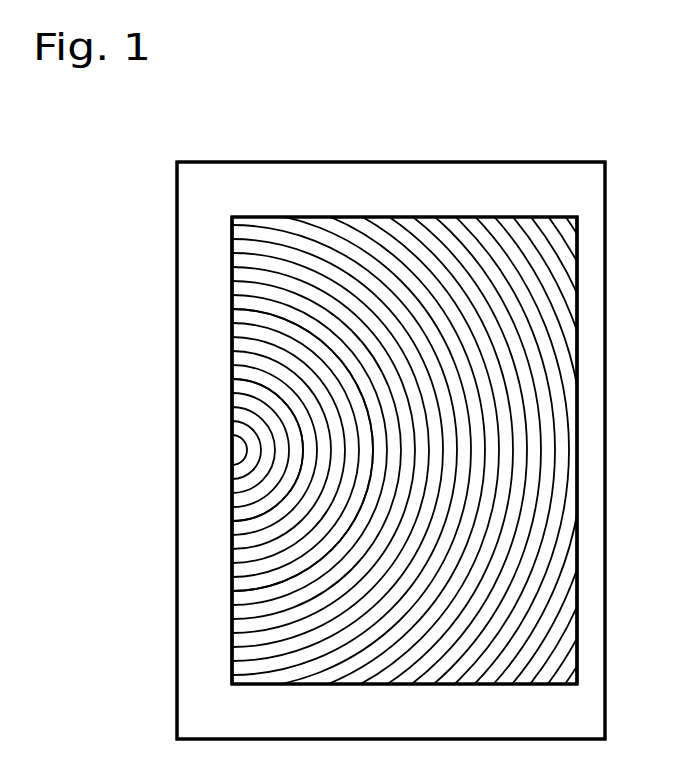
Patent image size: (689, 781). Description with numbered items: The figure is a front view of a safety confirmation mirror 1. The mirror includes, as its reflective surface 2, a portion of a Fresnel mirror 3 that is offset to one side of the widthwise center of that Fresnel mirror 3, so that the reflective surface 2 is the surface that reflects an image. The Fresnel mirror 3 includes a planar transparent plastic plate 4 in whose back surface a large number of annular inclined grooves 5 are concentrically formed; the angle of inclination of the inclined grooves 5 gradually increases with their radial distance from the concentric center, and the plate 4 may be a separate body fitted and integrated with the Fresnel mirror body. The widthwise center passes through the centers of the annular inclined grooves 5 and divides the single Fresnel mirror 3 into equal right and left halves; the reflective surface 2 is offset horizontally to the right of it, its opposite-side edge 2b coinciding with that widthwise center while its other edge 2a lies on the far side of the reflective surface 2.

The safety confirmation mirror 1 is at (152, 209).
The reflective surface 2 is at (418, 255).
The edge of the reflective surface 2a is at (577, 352).
The opposite-side edge 2b is at (232, 388).
The Fresnel mirror 3 is at (345, 217).
The transparent plastic plate 4 is at (177, 658).
The inclined grooves 5 is at (243, 513).